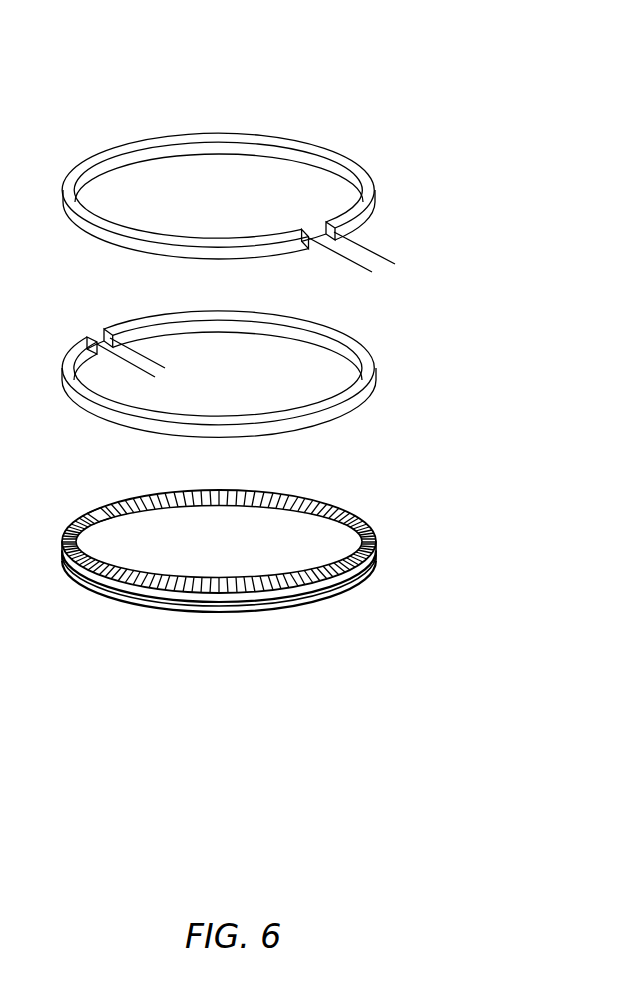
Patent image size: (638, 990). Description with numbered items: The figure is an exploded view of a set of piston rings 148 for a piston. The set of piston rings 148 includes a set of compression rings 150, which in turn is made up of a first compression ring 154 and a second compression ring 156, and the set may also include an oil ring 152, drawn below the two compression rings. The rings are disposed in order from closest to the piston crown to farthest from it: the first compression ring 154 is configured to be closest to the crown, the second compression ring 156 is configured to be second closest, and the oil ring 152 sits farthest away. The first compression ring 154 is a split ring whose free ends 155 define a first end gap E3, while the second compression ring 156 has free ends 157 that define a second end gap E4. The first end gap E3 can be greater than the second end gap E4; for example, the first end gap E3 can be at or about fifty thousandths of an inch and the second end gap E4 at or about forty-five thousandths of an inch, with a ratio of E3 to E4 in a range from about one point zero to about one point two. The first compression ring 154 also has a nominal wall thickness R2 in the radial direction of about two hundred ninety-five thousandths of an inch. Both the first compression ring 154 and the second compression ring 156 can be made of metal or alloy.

The set of piston rings 148 is at (484, 79).
The set of compression rings 150 is at (505, 177).
The oil ring 152 is at (372, 545).
The first compression ring 154 is at (372, 188).
The free ends 155 is at (301, 229).
The second compression ring 156 is at (372, 367).
The free ends 157 is at (91, 335).
The nominal wall thickness R2 is at (138, 202).
The first end gap E3 is at (425, 243).
The second end gap E4 is at (118, 395).